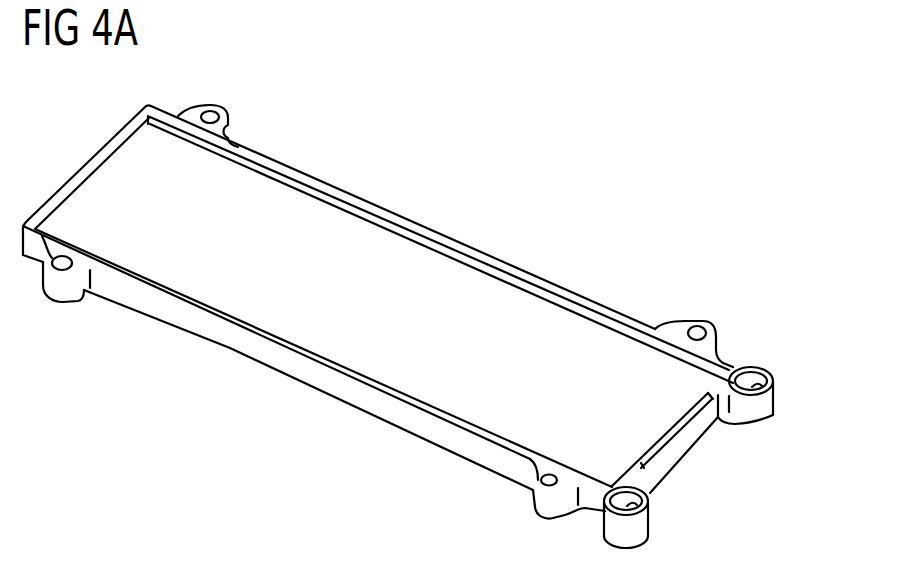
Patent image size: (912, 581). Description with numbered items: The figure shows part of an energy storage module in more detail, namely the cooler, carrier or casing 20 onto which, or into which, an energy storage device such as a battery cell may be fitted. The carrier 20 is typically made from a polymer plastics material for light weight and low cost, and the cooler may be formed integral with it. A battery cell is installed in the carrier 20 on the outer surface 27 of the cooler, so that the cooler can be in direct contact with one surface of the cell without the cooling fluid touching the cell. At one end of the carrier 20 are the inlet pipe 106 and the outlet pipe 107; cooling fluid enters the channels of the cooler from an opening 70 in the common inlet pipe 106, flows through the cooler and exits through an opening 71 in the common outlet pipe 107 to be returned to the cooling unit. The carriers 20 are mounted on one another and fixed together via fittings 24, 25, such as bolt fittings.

The carrier 20 is at (281, 354).
The fitting 24 is at (212, 112).
The fitting 25 is at (700, 330).
The outer surface 27 is at (410, 258).
The opening 70 is at (627, 495).
The opening 71 is at (752, 382).
The inlet pipe 106 is at (648, 522).
The outlet pipe 107 is at (775, 400).